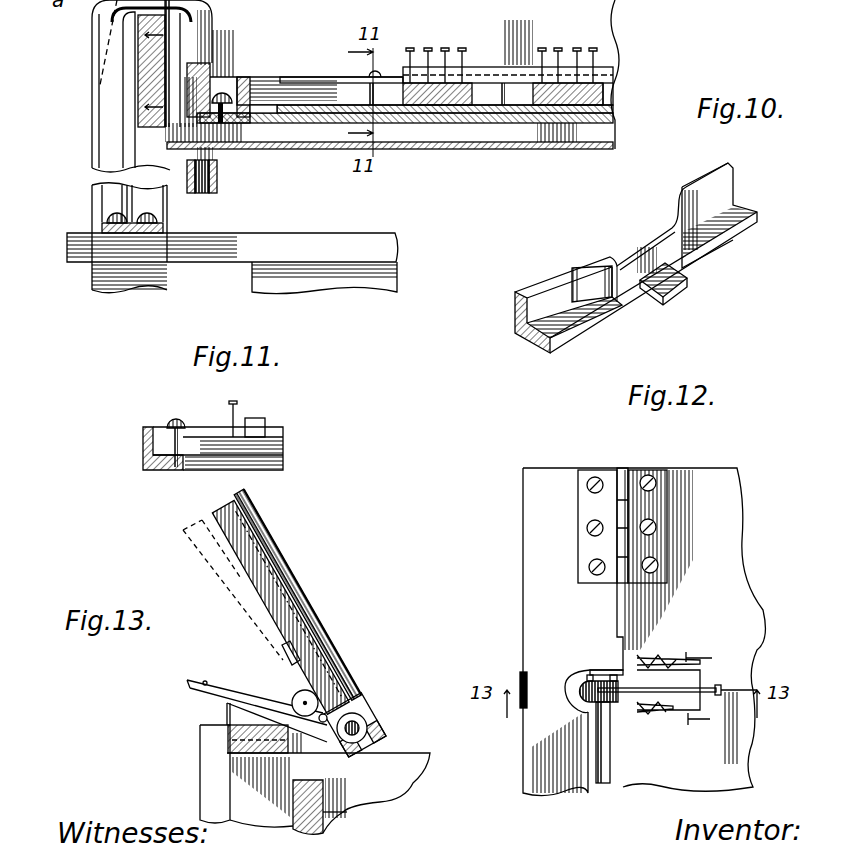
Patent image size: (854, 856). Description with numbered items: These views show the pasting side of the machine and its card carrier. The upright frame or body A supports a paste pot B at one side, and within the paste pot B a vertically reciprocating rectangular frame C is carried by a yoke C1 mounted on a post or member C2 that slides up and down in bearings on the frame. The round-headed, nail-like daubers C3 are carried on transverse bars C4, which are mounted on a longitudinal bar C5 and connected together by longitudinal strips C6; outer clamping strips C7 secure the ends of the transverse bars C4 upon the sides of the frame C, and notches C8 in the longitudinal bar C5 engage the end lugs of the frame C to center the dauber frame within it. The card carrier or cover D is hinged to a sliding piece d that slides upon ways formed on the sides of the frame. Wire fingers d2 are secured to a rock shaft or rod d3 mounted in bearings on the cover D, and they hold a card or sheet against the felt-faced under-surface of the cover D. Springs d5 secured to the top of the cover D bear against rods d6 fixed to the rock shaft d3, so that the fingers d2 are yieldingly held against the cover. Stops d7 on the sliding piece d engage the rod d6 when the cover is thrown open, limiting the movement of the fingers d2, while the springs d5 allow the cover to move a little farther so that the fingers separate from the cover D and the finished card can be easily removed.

In FIG. 10, the upright frame or body A is at (97, 122).
In FIG. 13, the upright frame or body A is at (305, 835).
In FIG. 10, the yoke C1 is at (110, 149).
In FIG. 10, the rectangular frame C is at (265, 112).
In FIG. 12, the rectangular frame C is at (563, 267).
In FIG. 11, the rectangular frame C is at (147, 471).
In FIG. 10, the post or member C2 is at (353, 283).
In FIG. 10, the daubers C3 is at (445, 50).
In FIG. 11, the daubers C3 is at (238, 412).
In FIG. 10, the transverse bars C4 is at (460, 96).
In FIG. 11, the transverse bars C4 is at (283, 440).
In FIG. 10, the longitudinal bar C5 is at (617, 116).
In FIG. 10, the longitudinal strips C6 is at (608, 70).
In FIG. 11, the longitudinal strips C6 is at (258, 426).
In FIG. 10, the outer clamping strips C7 is at (297, 77).
In FIG. 11, the outer clamping strips C7 is at (165, 428).
In FIG. 10, the notches C8 is at (275, 116).
In FIG. 10, the paste pot B is at (453, 144).
In FIG. 13, the sliding piece d is at (243, 753).
In FIG. 13, the card carrier or cover D is at (686, 546).
In FIG. 13, the wire fingers d2 is at (272, 545).
In FIG. 13, the rock shaft or rod d3 is at (355, 727).
In FIG. 13, the springs d5 is at (707, 632).
In FIG. 13, the rods d6 is at (723, 673).
In FIG. 13, the stops d7 is at (520, 677).